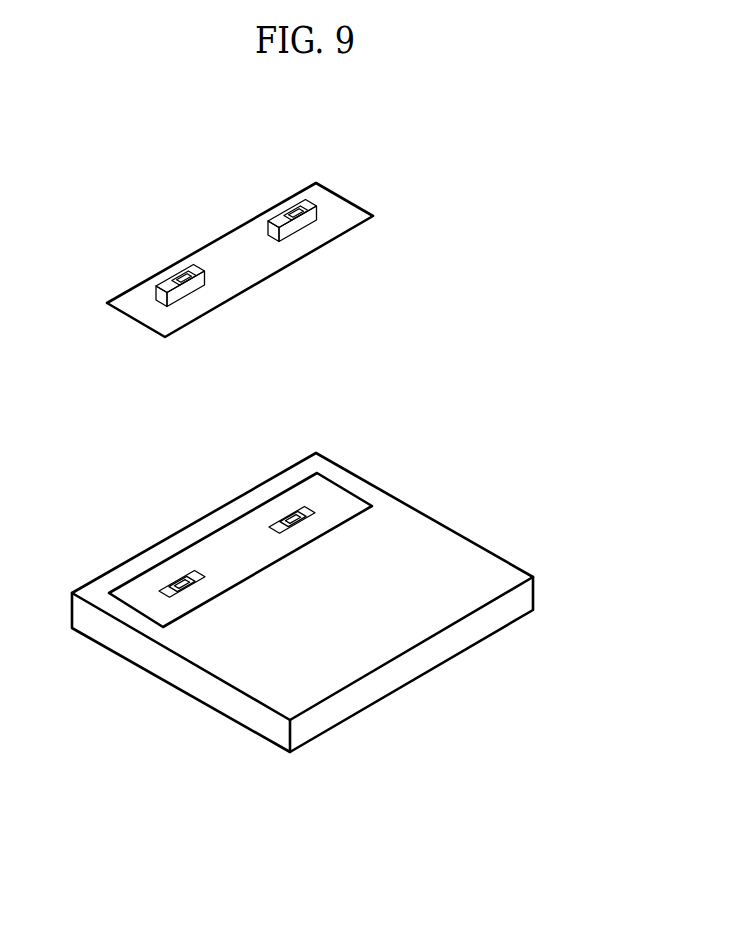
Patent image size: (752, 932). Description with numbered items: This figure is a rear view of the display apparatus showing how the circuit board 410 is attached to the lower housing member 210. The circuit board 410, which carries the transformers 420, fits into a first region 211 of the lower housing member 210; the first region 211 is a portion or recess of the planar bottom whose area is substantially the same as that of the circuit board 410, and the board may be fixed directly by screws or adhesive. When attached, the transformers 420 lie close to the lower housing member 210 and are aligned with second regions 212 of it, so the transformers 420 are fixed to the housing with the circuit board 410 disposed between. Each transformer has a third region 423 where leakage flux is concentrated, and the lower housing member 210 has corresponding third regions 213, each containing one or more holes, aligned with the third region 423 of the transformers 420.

The circuit board 410 is at (357, 167).
The transformers 420 is at (272, 214).
The third region of the transformers 423 is at (186, 281).
The lower housing member 210 is at (430, 538).
The first region 211 is at (343, 488).
The second regions 212 is at (270, 519).
The third regions 213 is at (186, 583).